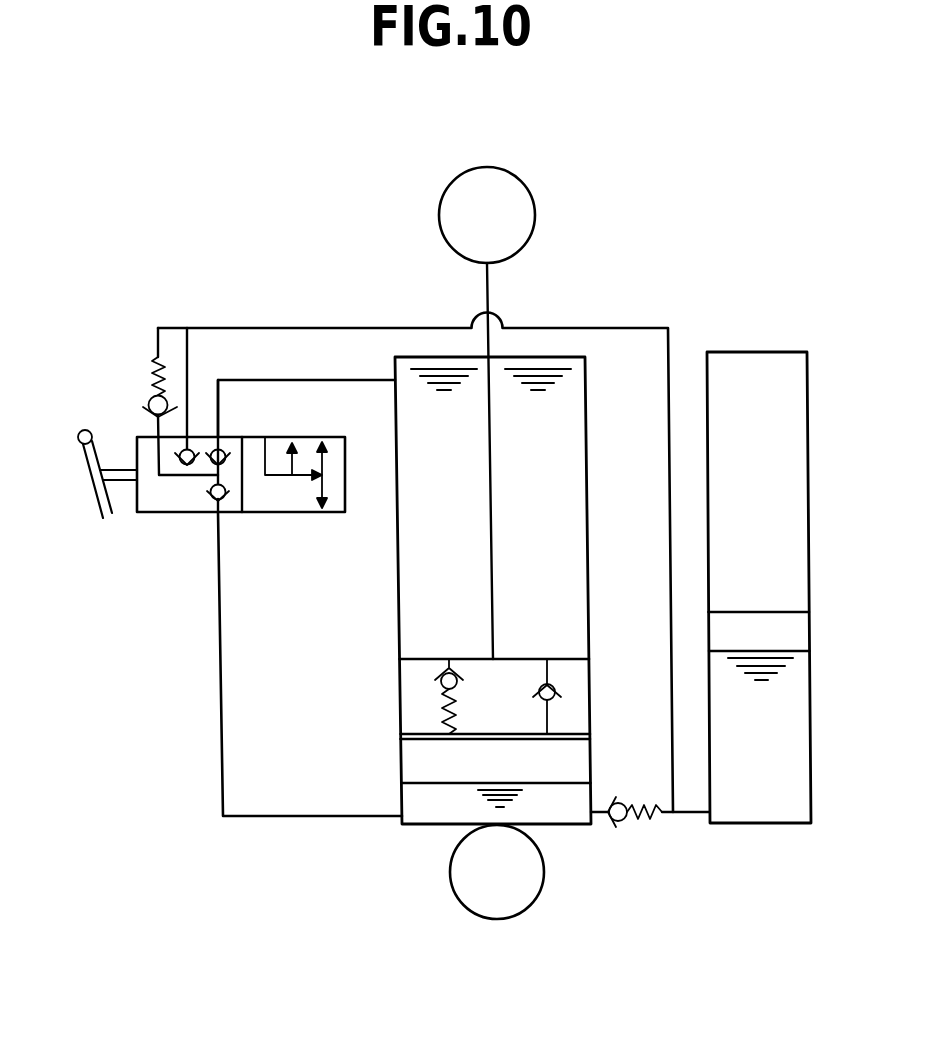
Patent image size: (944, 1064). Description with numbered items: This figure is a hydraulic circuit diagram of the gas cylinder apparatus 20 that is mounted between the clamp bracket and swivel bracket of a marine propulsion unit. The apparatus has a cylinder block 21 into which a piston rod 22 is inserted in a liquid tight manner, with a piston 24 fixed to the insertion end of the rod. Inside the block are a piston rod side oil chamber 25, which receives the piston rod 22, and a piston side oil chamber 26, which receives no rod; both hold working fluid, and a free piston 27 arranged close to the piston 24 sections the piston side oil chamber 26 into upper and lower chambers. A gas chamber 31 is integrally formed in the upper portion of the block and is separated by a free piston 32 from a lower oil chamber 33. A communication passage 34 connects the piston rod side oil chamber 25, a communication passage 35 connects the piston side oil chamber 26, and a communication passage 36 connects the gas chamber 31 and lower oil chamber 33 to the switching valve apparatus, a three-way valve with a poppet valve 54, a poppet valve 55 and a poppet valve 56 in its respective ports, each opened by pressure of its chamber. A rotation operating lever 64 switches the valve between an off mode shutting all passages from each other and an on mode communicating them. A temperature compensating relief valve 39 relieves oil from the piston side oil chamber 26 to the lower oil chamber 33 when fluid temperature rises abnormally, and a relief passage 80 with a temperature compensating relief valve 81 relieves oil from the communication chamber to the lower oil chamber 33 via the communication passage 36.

The gas cylinder apparatus 20 is at (645, 274).
The cylinder block 21 is at (397, 575).
The piston rod 22 is at (482, 285).
The piston 24 is at (415, 699).
The piston rod side oil chamber 25 is at (417, 622).
The piston side oil chamber 26 is at (418, 801).
The free piston 27 is at (423, 762).
The gas chamber 31 is at (792, 503).
The free piston 32 is at (793, 632).
The lower oil chamber 33 is at (795, 727).
The communication passage 34 is at (347, 380).
The communication passage 35 is at (222, 802).
The communication passage 36 is at (317, 327).
The temperature compensating relief valve 39 is at (615, 826).
The poppet valve 54 is at (230, 461).
The poppet valve 55 is at (227, 495).
The poppet valve 56 is at (188, 449).
The rotation operating lever 64 is at (78, 432).
The relief passage 80 is at (163, 328).
The temperature compensating relief valve 81 is at (148, 400).